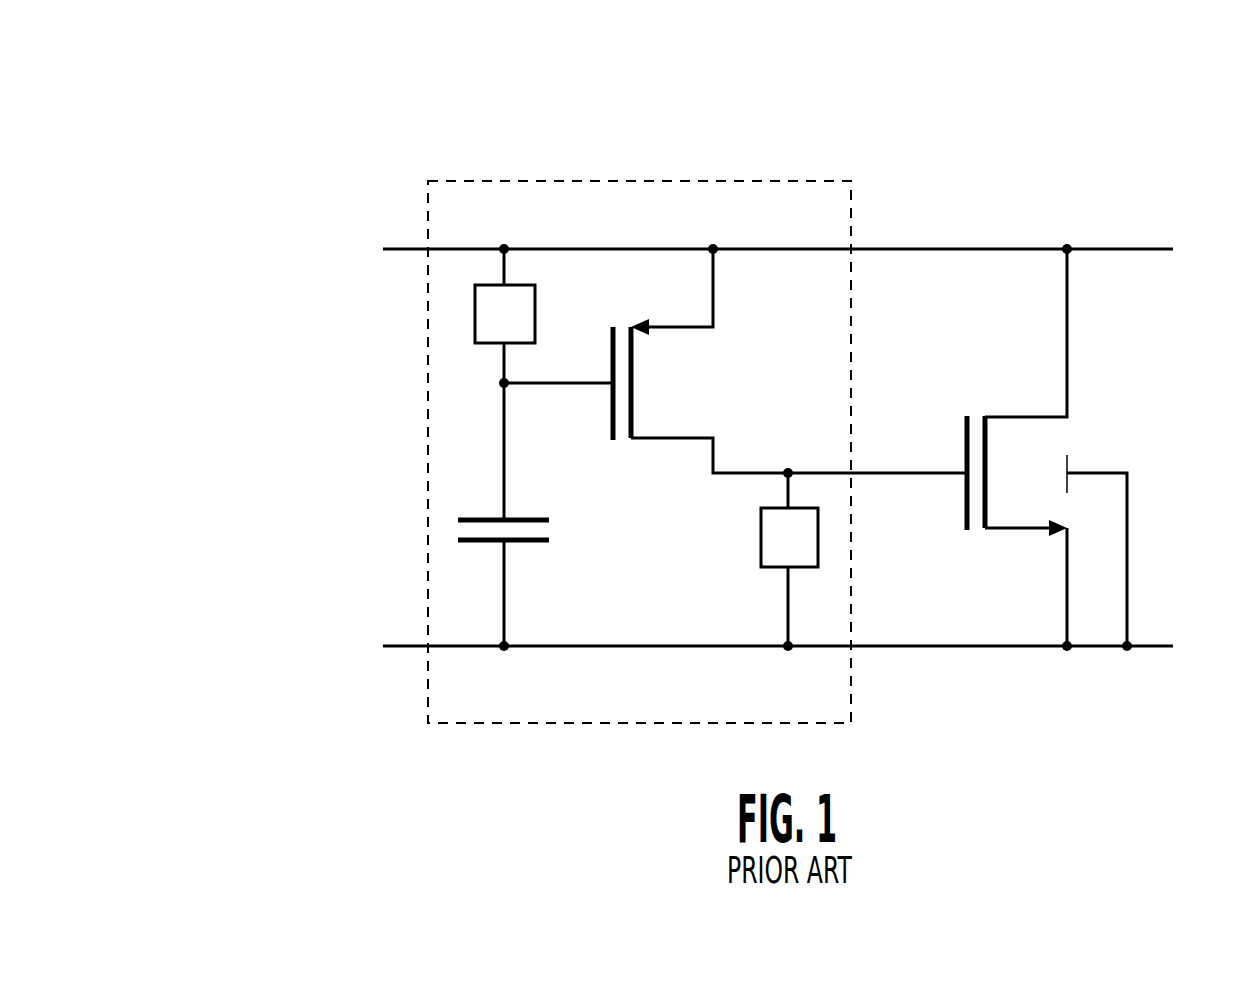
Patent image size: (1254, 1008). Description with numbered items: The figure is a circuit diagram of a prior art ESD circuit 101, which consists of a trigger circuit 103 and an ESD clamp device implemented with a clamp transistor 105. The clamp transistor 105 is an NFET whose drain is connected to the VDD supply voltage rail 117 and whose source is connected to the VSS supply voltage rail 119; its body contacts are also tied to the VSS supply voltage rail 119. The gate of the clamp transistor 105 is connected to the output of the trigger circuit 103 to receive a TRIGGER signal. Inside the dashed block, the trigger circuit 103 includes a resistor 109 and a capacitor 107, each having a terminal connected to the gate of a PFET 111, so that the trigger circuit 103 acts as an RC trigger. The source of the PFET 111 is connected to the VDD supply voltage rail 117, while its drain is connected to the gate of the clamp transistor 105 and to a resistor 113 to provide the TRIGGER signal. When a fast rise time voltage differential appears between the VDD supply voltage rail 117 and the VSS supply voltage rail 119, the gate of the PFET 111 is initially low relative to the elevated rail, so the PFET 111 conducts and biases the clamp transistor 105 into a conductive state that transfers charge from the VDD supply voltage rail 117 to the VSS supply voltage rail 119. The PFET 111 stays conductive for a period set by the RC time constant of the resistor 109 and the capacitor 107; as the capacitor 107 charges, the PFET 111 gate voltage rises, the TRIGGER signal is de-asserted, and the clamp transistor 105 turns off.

The ESD circuit 101 is at (299, 126).
The trigger circuit 103 is at (752, 181).
The clamp transistor 105 is at (985, 453).
The capacitor 107 is at (530, 543).
The resistor 109 is at (535, 321).
The PFET 111 is at (633, 385).
The resistor 113 is at (760, 540).
The VDD supply voltage rail 117 is at (1043, 248).
The VSS supply voltage rail 119 is at (1043, 645).